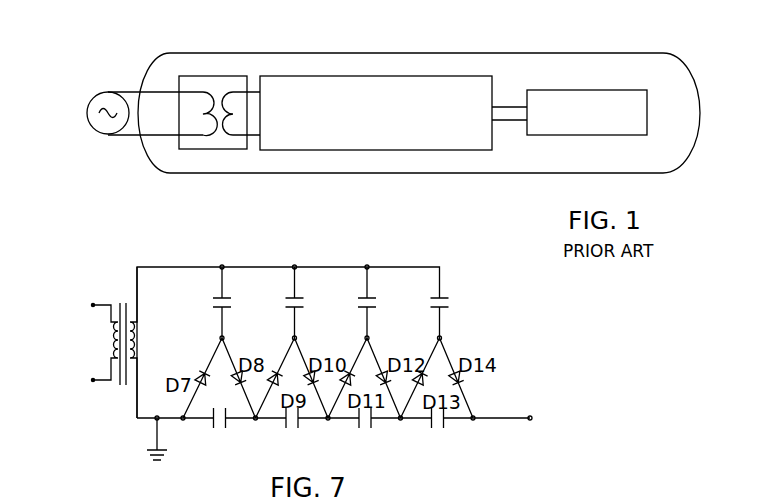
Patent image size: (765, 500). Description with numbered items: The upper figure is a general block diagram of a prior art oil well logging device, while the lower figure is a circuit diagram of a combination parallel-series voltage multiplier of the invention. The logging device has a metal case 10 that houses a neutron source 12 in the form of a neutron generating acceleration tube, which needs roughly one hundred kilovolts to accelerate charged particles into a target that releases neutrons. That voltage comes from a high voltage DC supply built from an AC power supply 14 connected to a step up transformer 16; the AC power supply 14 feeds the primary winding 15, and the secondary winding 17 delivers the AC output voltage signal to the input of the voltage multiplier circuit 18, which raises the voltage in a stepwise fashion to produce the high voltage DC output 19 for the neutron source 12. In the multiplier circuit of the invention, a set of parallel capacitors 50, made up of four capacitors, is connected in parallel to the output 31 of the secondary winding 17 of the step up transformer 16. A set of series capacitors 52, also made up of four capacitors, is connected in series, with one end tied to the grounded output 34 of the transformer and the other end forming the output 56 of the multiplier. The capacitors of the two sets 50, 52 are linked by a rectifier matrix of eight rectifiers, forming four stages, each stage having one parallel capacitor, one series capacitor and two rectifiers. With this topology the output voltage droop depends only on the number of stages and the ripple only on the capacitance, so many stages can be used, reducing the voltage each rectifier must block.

In FIG. 1, the metal case 10 is at (505, 53).
In FIG. 1, the neutron source 12 is at (597, 90).
In FIG. 1, the AC power supply 14 is at (93, 96).
In FIG. 1, the primary winding 15 is at (200, 128).
In FIG. 7, the primary winding 15 is at (112, 347).
In FIG. 1, the step up transformer 16 is at (212, 76).
In FIG. 7, the step up transformer 16 is at (104, 287).
In FIG. 1, the secondary winding 17 is at (231, 130).
In FIG. 7, the secondary winding 17 is at (139, 344).
In FIG. 1, the voltage multiplier circuit 18 is at (388, 76).
In FIG. 1, the high voltage DC output 19 is at (508, 122).
In FIG. 7, the output of the secondary winding 31 is at (170, 266).
In FIG. 7, the grounded output 34 is at (138, 420).
In FIG. 7, the set of parallel capacitors 50 is at (460, 300).
In FIG. 7, the set of series capacitors 52 is at (468, 434).
In FIG. 7, the output of the multiplier circuit 56 is at (532, 418).